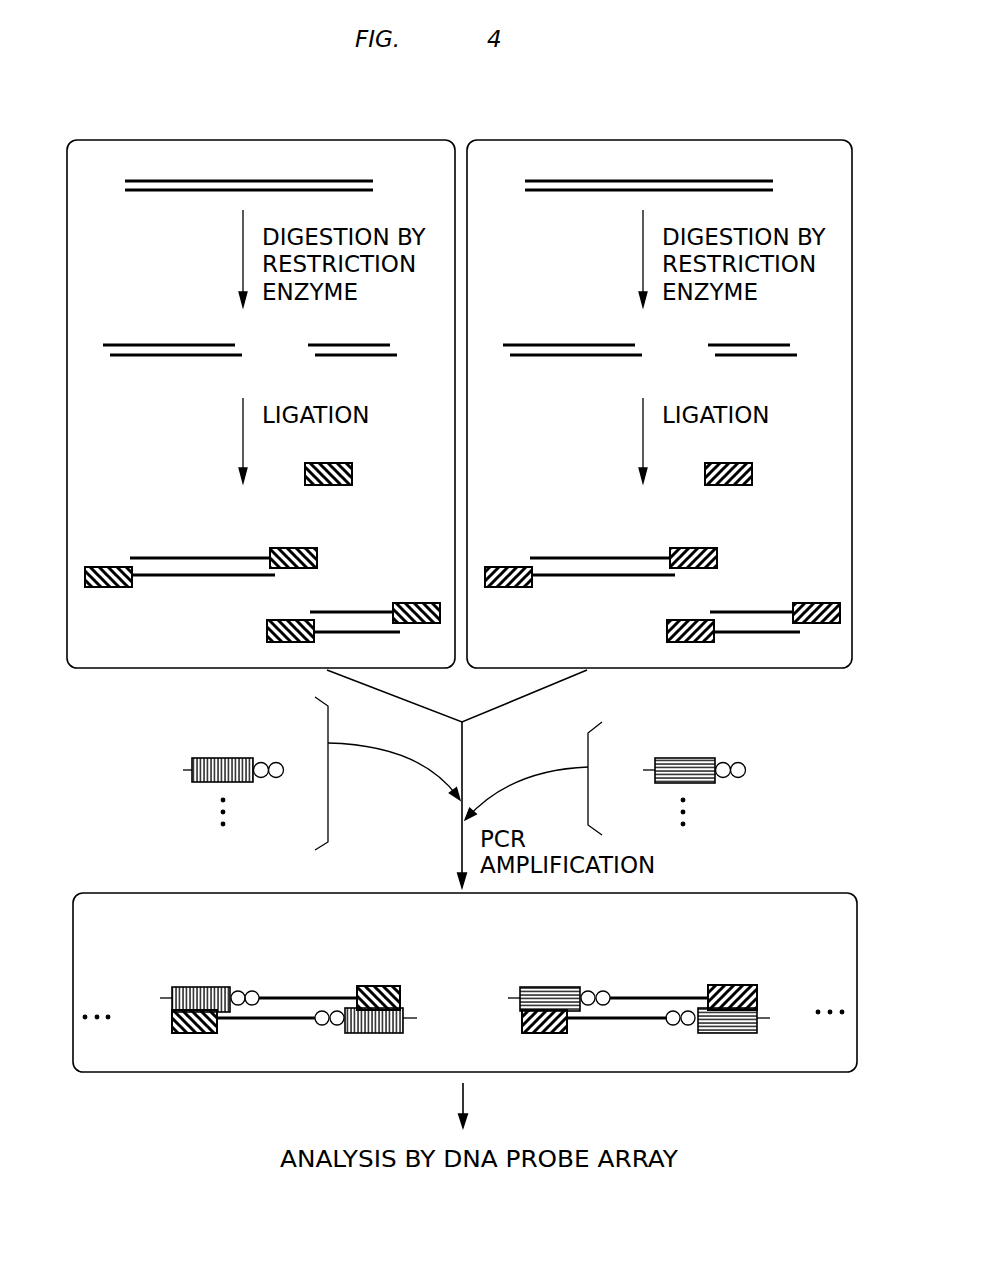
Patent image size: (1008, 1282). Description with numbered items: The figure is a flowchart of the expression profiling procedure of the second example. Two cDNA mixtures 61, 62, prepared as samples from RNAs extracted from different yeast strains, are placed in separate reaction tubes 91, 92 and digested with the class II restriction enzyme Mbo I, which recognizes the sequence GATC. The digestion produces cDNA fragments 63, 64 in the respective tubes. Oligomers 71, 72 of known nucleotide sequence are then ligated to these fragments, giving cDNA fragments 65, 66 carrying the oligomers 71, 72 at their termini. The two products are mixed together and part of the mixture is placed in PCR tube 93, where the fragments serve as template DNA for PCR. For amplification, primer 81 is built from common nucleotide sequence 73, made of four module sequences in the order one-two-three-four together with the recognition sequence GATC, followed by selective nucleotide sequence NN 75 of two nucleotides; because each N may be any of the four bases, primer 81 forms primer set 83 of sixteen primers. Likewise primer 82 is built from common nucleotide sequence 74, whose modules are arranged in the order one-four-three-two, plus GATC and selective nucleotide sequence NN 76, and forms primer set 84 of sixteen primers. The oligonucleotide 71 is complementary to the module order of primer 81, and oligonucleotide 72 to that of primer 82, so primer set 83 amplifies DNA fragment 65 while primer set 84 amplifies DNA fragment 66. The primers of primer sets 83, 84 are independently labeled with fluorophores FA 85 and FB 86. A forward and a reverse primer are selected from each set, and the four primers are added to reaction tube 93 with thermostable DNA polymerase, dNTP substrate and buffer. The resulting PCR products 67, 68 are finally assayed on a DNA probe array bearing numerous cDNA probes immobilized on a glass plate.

The reaction tube 91 is at (107, 140).
The reaction tube 92 is at (507, 140).
The cDNA mixture 61 is at (397, 165).
The cDNA mixture 62 is at (684, 187).
The cDNA fragments 63 is at (99, 372).
The cDNA fragments 64 is at (665, 332).
The oligomer 71 is at (353, 474).
The oligomer 72 is at (750, 461).
The cDNA fragments with ligated oligomers 65 is at (332, 590).
The cDNA fragments with ligated oligomers 66 is at (662, 595).
The primer 81 is at (186, 772).
The primer 82 is at (722, 769).
The primer set 83 is at (330, 822).
The primer set 84 is at (588, 755).
The fluorophore FA 85 is at (168, 750).
The fluorophore FB 86 is at (622, 756).
The common nucleotide sequence 73 is at (252, 752).
The common nucleotide sequence 74 is at (658, 752).
The selective nucleotide sequence NN 75 is at (280, 785).
The selective nucleotide sequence NN 76 is at (745, 785).
The PCR tube 93 is at (107, 892).
The PCR product 67 is at (295, 994).
The PCR product 68 is at (647, 994).